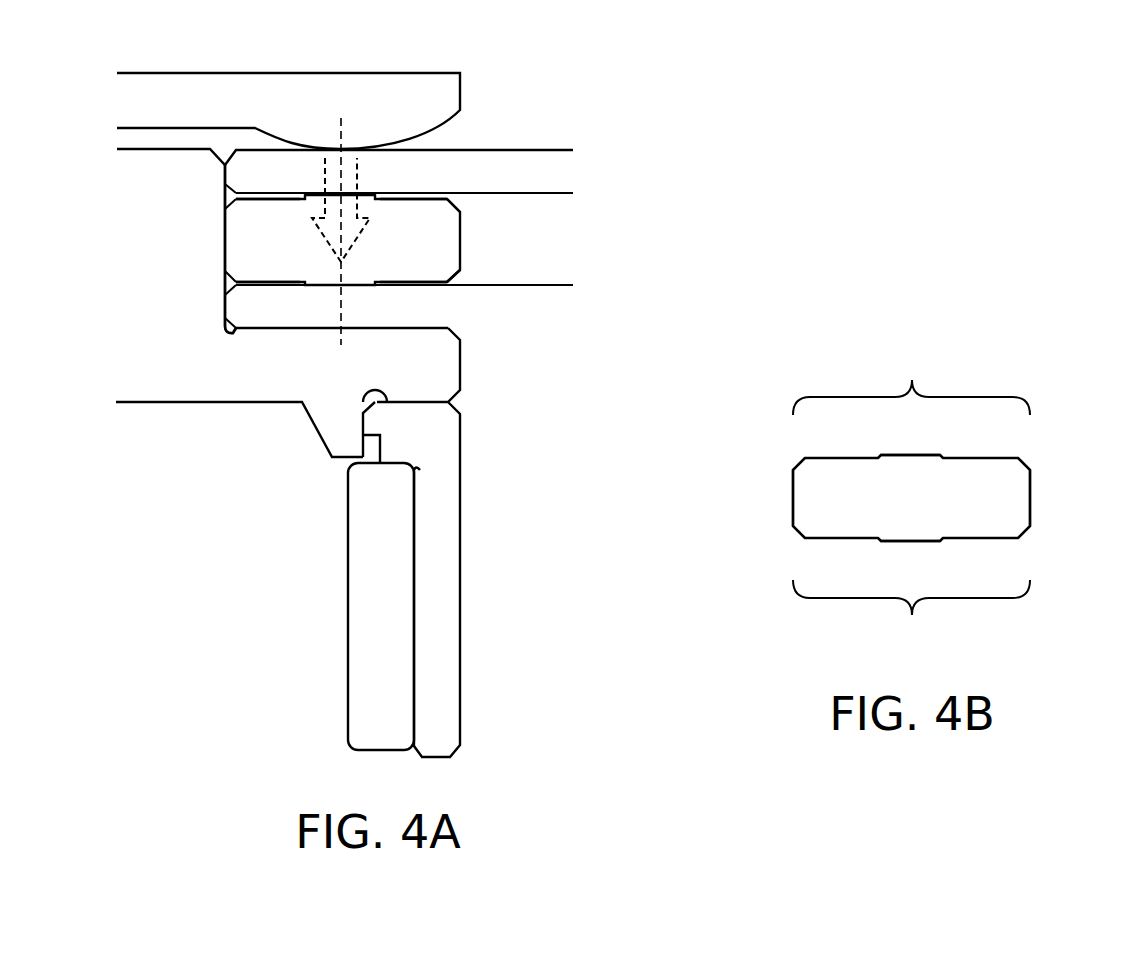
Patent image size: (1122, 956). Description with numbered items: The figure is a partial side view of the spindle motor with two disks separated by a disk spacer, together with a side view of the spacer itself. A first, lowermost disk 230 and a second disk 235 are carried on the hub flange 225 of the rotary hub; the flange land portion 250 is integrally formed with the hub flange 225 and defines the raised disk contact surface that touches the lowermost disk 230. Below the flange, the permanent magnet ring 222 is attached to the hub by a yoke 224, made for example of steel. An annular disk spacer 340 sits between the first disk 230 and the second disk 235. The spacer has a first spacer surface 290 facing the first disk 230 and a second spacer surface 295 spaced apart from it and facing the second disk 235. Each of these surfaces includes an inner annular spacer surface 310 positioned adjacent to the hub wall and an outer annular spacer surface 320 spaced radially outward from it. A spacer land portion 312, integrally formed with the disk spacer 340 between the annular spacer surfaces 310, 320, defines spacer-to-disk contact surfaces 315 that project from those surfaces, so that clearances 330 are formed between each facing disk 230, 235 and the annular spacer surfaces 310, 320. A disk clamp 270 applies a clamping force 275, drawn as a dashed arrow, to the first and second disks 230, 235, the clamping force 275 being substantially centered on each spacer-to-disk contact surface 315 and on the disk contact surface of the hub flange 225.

In FIG. 4A, the permanent magnet ring 222 is at (348, 597).
In FIG. 4A, the yoke 224 is at (460, 597).
In FIG. 4A, the hub flange 225 is at (462, 372).
In FIG. 4A, the first disk 230 is at (552, 288).
In FIG. 4A, the second disk 235 is at (514, 162).
In FIG. 4A, the flange land portion 250 is at (352, 328).
In FIG. 4A, the disk clamp 270 is at (362, 87).
In FIG. 4A, the clamping force 275 is at (350, 248).
In FIG. 4B, the first spacer surface 290 is at (911, 614).
In FIG. 4B, the second spacer surface 295 is at (911, 383).
In FIG. 4A, the inner annular spacer surface 310 is at (270, 198).
In FIG. 4B, the inner annular spacer surface 310 is at (815, 458).
In FIG. 4A, the spacer land portion 312 is at (348, 192).
In FIG. 4B, the spacer land portion 312 is at (911, 457).
In FIG. 4A, the spacer-to-disk contact surface 315 is at (330, 192).
In FIG. 4B, the spacer-to-disk contact surface 315 is at (925, 453).
In FIG. 4A, the outer annular spacer surface 320 is at (428, 200).
In FIG. 4B, the outer annular spacer surface 320 is at (1014, 458).
In FIG. 4A, the clearance 330 is at (490, 201).
In FIG. 4A, the annular disk spacer 340 is at (452, 228).
In FIG. 4B, the annular disk spacer 340 is at (1020, 497).